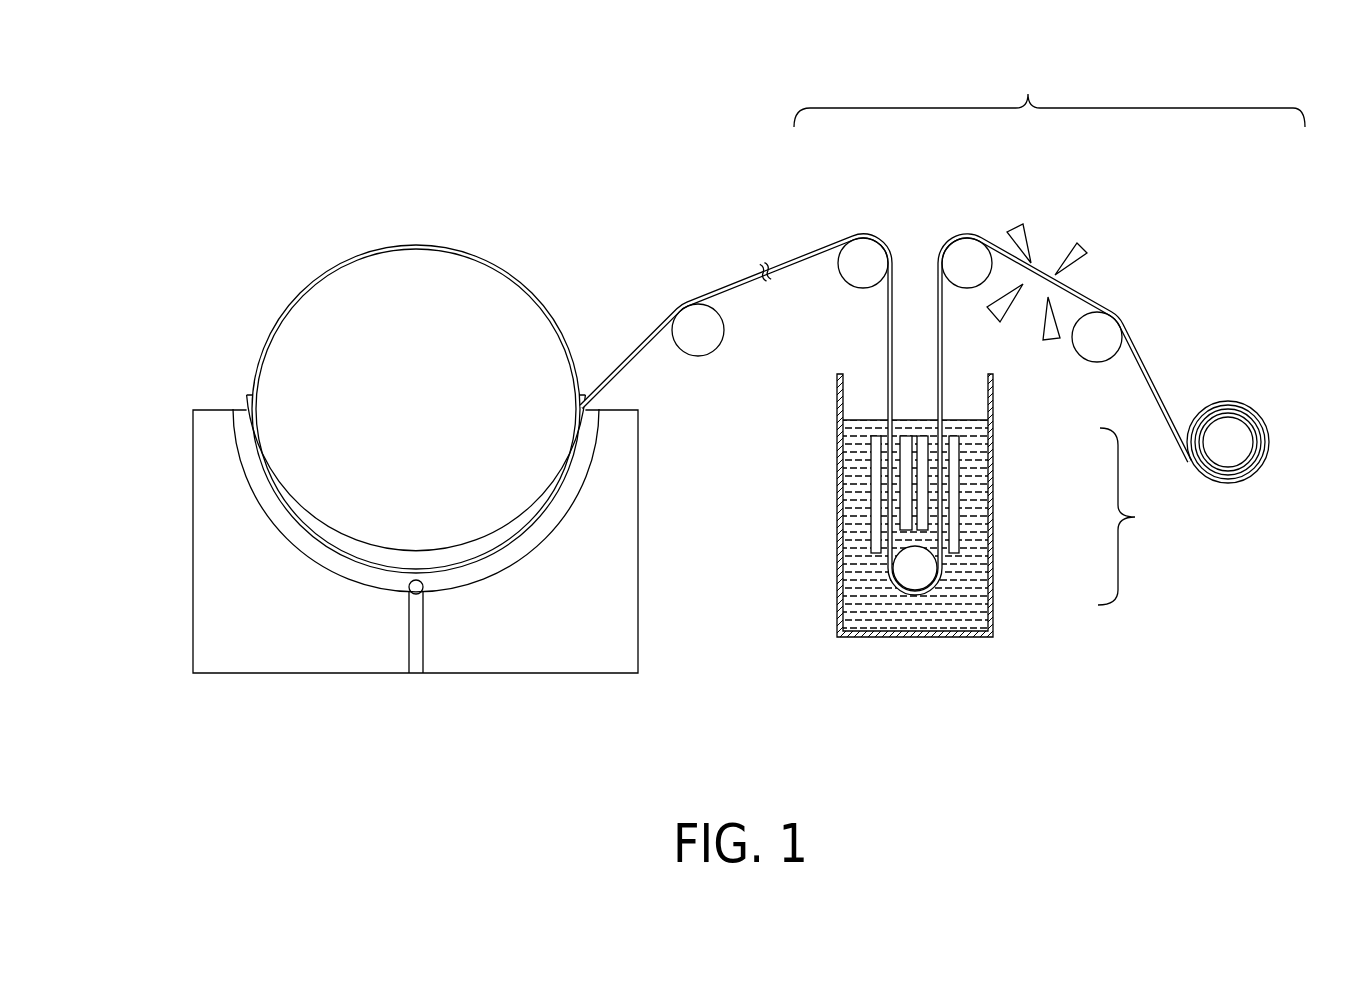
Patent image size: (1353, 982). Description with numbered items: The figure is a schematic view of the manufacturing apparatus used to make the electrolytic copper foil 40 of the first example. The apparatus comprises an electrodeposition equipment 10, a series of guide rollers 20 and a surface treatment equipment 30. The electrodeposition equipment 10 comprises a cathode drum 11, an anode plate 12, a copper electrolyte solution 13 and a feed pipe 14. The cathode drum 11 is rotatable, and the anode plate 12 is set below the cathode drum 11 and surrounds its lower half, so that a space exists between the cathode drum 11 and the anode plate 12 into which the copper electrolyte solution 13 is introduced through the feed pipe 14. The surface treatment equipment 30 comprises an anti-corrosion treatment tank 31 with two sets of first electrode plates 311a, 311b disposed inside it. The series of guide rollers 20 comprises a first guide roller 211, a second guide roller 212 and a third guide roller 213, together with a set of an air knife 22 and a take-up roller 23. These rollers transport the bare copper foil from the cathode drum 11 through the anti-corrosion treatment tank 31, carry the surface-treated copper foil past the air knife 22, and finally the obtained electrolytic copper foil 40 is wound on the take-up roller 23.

The electrodeposition equipment 10 is at (343, 690).
The cathode drum 11 is at (347, 283).
The anode plate 12 is at (542, 538).
The copper electrolyte solution 13 is at (238, 432).
The feed pipe 14 is at (418, 658).
The series of guide rollers 20 is at (1049, 92).
The first guide roller 211 is at (865, 250).
The second guide roller 212 is at (963, 248).
The third guide roller 213 is at (1108, 328).
The air knife 22 is at (1015, 220).
The take-up roller 23 is at (1228, 415).
The surface treatment equipment 30 is at (1132, 516).
The anti-corrosion treatment tank 31 is at (995, 583).
The first electrode plates 311a is at (875, 526).
The first electrode plates 311b is at (957, 485).
The electrolytic copper foil 40 is at (1152, 355).